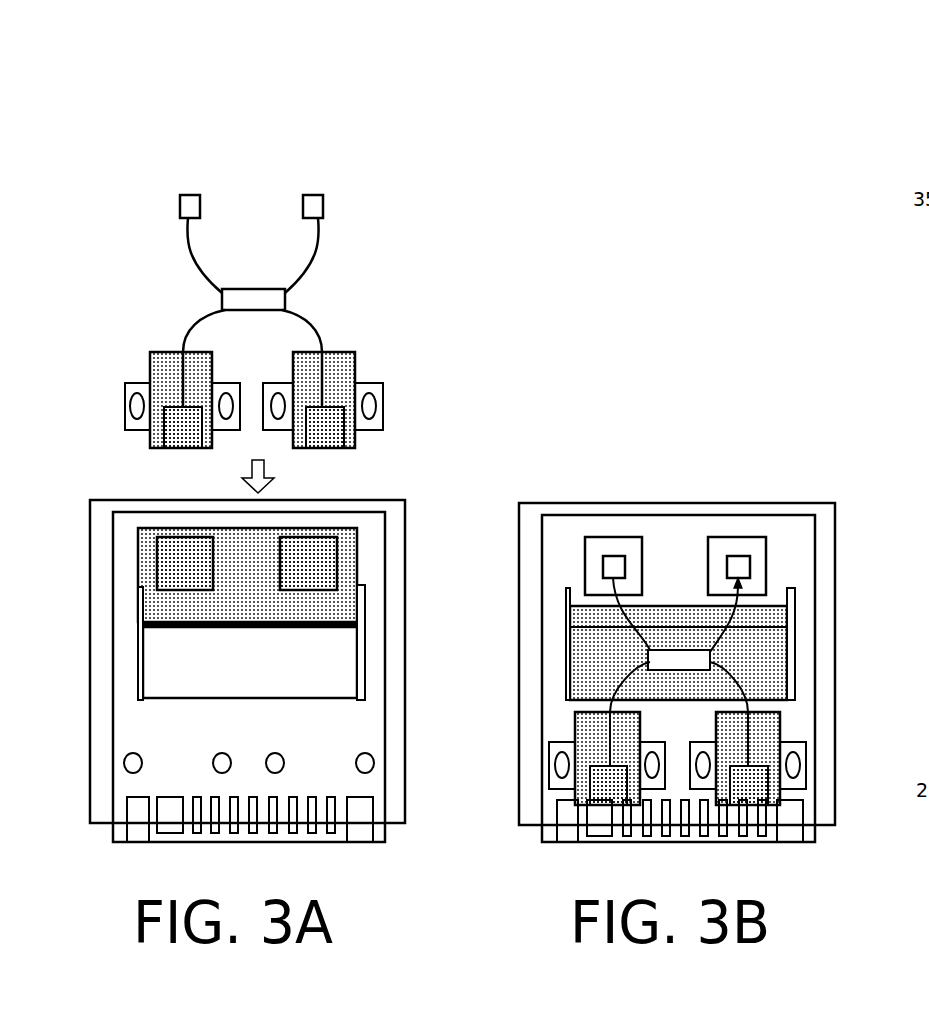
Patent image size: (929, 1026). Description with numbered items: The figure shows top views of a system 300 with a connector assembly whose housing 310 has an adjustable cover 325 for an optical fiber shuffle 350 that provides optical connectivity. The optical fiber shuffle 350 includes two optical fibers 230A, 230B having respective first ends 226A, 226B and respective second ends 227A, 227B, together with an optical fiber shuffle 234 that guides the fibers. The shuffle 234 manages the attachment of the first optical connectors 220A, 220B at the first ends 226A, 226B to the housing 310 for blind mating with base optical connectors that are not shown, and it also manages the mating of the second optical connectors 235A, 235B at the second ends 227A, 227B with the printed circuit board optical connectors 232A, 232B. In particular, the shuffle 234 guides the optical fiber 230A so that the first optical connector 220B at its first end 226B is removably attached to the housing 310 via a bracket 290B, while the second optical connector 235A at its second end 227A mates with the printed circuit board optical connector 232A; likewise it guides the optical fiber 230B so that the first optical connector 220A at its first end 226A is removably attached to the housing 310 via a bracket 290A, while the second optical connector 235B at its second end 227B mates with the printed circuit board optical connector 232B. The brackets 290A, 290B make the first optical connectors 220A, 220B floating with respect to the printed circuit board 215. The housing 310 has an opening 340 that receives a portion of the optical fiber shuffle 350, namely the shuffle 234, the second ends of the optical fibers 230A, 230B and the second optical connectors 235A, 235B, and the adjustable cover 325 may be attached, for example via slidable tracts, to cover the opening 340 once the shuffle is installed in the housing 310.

In FIG. 3A, the printed circuit board 215 is at (130, 741).
In FIG. 3B, the printed circuit board 215 is at (556, 707).
In FIG. 3A, the first optical connector 220A is at (180, 450).
In FIG. 3B, the first optical connector 220A is at (602, 791).
In FIG. 3A, the first optical connector 220B is at (326, 450).
In FIG. 3B, the first optical connector 220B is at (750, 805).
In FIG. 3A, the first end 226A is at (138, 443).
In FIG. 3A, the first end 226B is at (370, 437).
In FIG. 3A, the second end 227A is at (152, 205).
In FIG. 3A, the second end 227B is at (370, 193).
In FIG. 3A, the optical fiber 230A is at (187, 258).
In FIG. 3A, the optical fiber 230B is at (310, 265).
In FIG. 3A, the printed circuit board optical connector 232A is at (160, 562).
In FIG. 3B, the printed circuit board optical connector 232A is at (613, 556).
In FIG. 3A, the printed circuit board optical connector 232B is at (322, 557).
In FIG. 3B, the printed circuit board optical connector 232B is at (738, 556).
In FIG. 3A, the optical fiber shuffle 234 is at (255, 289).
In FIG. 3B, the optical fiber shuffle 234 is at (679, 672).
In FIG. 3A, the second optical connector 235A is at (190, 195).
In FIG. 3A, the second optical connector 235B is at (316, 195).
In FIG. 3A, the bracket 290A is at (150, 355).
In FIG. 3B, the bracket 290A is at (607, 758).
In FIG. 3A, the bracket 290B is at (355, 362).
In FIG. 3B, the bracket 290B is at (748, 758).
In FIG. 3A, the system 300 is at (474, 364).
In FIG. 3B, the system 300 is at (705, 465).
In FIG. 3A, the housing 310 is at (406, 601).
In FIG. 3B, the housing 310 is at (836, 524).
In FIG. 3A, the adjustable cover 325 is at (358, 578).
In FIG. 3B, the adjustable cover 325 is at (787, 607).
In FIG. 3A, the opening 340 is at (366, 663).
In FIG. 3A, the optical fiber shuffle 350 is at (360, 316).